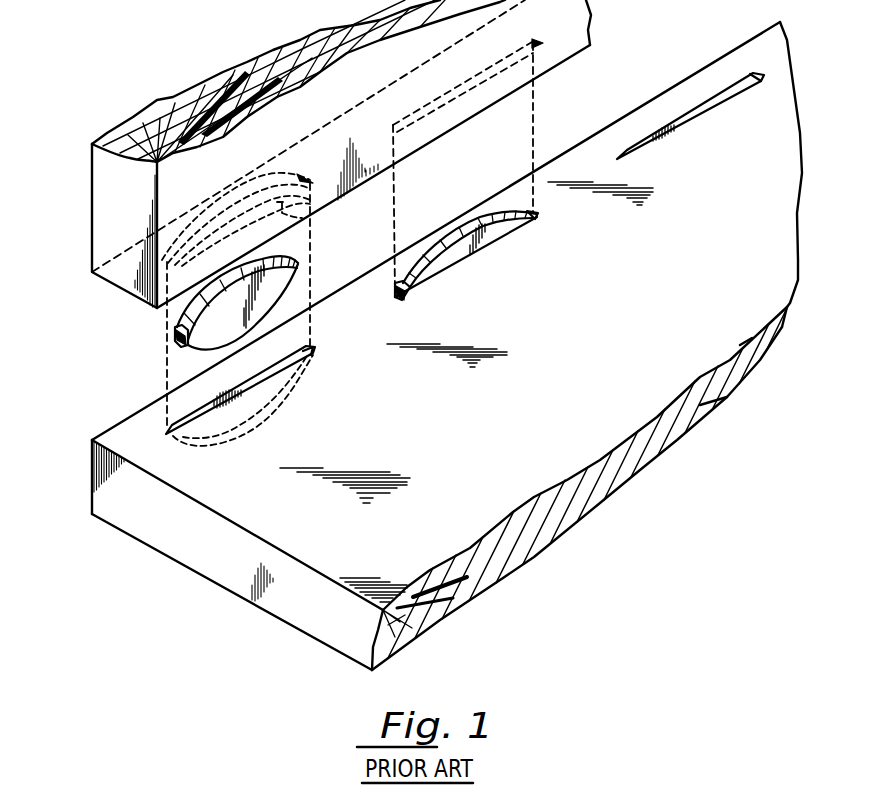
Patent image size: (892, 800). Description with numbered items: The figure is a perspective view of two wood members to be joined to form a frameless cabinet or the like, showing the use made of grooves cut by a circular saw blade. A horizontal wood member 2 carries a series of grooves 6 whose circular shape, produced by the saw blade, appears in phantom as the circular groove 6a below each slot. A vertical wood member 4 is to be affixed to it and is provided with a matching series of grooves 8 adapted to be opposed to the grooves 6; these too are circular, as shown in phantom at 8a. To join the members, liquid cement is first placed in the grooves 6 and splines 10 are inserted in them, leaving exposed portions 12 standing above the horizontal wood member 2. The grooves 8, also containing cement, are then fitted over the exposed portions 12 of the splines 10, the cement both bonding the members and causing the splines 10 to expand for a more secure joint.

The horizontal wood member 2 is at (222, 550).
The vertical wood member 4 is at (110, 212).
The grooves 6 is at (210, 408).
The circular groove 6a is at (235, 433).
The grooves 8 is at (306, 226).
The circular groove 8a is at (282, 170).
The splines 10 is at (238, 321).
The exposed portions 12 is at (497, 227).